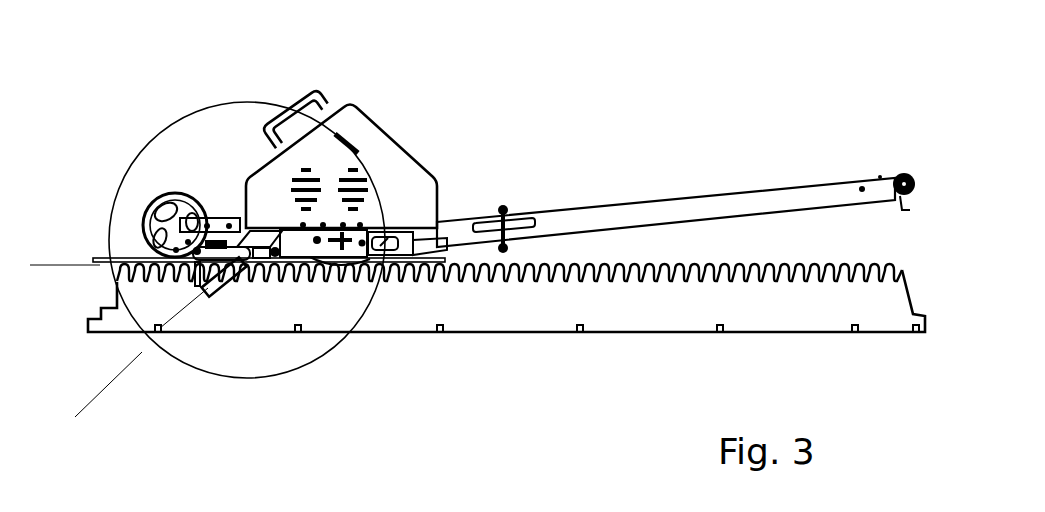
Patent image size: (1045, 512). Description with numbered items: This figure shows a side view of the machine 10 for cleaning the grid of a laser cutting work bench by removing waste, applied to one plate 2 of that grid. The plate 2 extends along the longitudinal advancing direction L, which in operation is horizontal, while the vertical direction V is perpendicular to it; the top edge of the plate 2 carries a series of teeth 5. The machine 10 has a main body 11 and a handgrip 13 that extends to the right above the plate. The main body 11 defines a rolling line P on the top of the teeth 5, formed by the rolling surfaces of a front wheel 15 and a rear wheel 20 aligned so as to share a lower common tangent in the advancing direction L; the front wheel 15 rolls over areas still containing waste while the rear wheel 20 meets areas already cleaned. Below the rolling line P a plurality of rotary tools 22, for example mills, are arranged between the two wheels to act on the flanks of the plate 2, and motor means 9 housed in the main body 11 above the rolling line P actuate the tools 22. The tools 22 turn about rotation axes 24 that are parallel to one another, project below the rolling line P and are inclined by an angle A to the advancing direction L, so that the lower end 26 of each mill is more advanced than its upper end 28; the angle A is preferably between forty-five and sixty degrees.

The machine 10 is at (591, 114).
The main body 11 is at (384, 129).
The motor means 9 is at (318, 150).
The front wheel 15 is at (164, 197).
The handgrip 13 is at (897, 171).
The teeth 5 is at (683, 261).
The plate 2 is at (635, 300).
The rear wheel 20 is at (352, 275).
The upper end 28 is at (247, 282).
The lower end 26 is at (210, 302).
The tools 22 is at (229, 295).
The rotation axes 24 is at (96, 406).
The rolling line P is at (62, 263).
The angle A is at (106, 380).
The advancing direction L is at (746, 247).
The vertical direction V is at (840, 151).